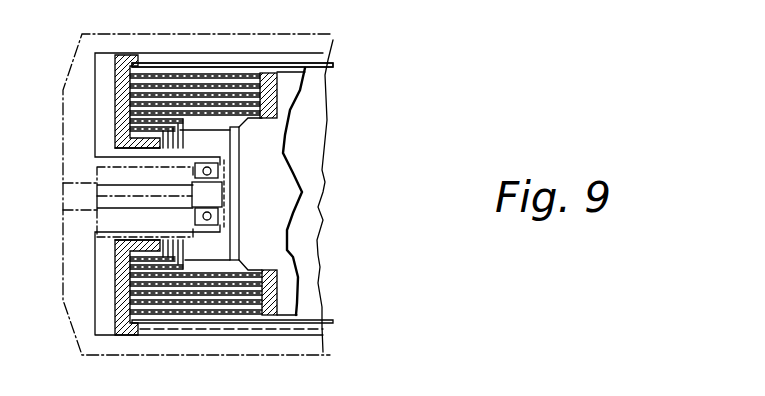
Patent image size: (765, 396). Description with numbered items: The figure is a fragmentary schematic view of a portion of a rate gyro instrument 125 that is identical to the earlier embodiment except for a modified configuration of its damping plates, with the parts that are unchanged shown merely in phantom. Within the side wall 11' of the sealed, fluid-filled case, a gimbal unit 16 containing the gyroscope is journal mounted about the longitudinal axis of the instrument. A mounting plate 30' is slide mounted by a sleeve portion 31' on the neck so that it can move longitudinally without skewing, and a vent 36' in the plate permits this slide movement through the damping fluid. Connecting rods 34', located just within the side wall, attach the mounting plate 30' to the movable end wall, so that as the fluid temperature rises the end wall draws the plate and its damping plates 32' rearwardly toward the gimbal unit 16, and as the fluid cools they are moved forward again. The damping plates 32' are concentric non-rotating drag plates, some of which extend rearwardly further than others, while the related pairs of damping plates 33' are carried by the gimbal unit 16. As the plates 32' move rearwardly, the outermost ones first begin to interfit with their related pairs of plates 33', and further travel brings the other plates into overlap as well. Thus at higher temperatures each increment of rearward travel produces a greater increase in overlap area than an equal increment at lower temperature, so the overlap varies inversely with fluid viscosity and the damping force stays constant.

The instrument 125 is at (136, 38).
The damping plates 32' is at (231, 59).
The damping plates 33' is at (195, 74).
The connecting rods 34' is at (260, 178).
The vent 36' is at (101, 158).
The sleeve portion 31' is at (147, 287).
The mounting plate 30' is at (139, 282).
The side wall 11' is at (147, 279).
The gimbal unit 16 is at (268, 195).